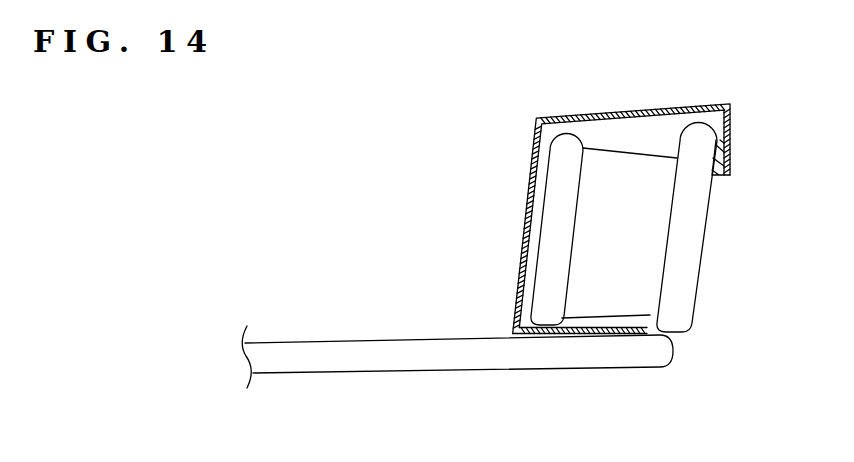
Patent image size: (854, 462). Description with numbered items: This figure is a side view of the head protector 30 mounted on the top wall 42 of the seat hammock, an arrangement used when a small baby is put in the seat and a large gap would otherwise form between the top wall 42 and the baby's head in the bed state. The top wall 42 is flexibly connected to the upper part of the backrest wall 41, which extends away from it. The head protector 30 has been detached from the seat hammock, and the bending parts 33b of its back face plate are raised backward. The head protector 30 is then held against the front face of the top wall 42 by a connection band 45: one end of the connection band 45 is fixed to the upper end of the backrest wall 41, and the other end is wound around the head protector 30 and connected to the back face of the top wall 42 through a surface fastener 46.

The backrest wall 41 is at (363, 360).
The connection band 45 is at (587, 338).
The surface fastener 46 is at (733, 155).
The top wall 42 is at (690, 240).
The head protector 30 is at (543, 312).
The bending parts 33b is at (613, 290).